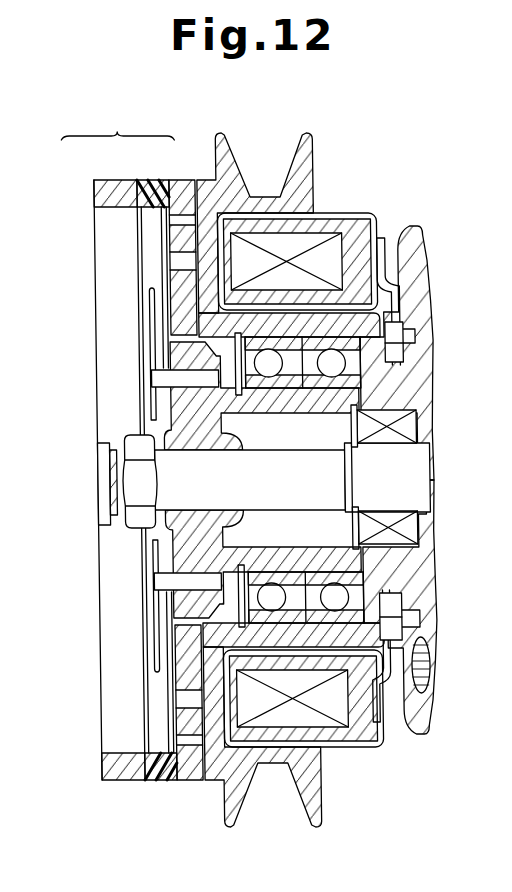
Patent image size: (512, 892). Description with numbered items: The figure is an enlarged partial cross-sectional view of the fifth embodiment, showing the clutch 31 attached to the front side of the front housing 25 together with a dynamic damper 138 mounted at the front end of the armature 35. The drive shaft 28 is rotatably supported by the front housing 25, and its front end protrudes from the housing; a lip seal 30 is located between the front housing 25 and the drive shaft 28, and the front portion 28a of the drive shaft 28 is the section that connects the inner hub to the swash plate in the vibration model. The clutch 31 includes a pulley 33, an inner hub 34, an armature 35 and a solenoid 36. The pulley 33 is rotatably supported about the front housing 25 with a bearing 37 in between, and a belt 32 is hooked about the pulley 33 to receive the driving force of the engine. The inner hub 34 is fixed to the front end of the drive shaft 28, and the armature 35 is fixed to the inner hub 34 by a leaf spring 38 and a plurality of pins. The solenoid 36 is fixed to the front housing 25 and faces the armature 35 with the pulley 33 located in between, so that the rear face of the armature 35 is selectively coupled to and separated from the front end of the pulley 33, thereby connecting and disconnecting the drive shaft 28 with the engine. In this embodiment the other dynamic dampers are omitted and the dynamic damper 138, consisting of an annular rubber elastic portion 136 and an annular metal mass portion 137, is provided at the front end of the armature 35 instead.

The front housing 25 is at (423, 571).
The drive shaft 28 is at (310, 466).
The front portion of the drive shaft 28a is at (285, 497).
The lip seal 30 is at (388, 443).
The clutch 31 is at (380, 157).
The belt 32 is at (276, 151).
The pulley 33 is at (318, 156).
The inner hub 34 is at (149, 405).
The armature 35 is at (191, 182).
The solenoid 36 is at (366, 220).
The bearing 37 is at (264, 371).
The leaf spring 38 is at (121, 480).
The annular rubber elastic portion 136 is at (164, 184).
The annular metal mass portion 137 is at (113, 184).
The dynamic damper 138 is at (118, 119).